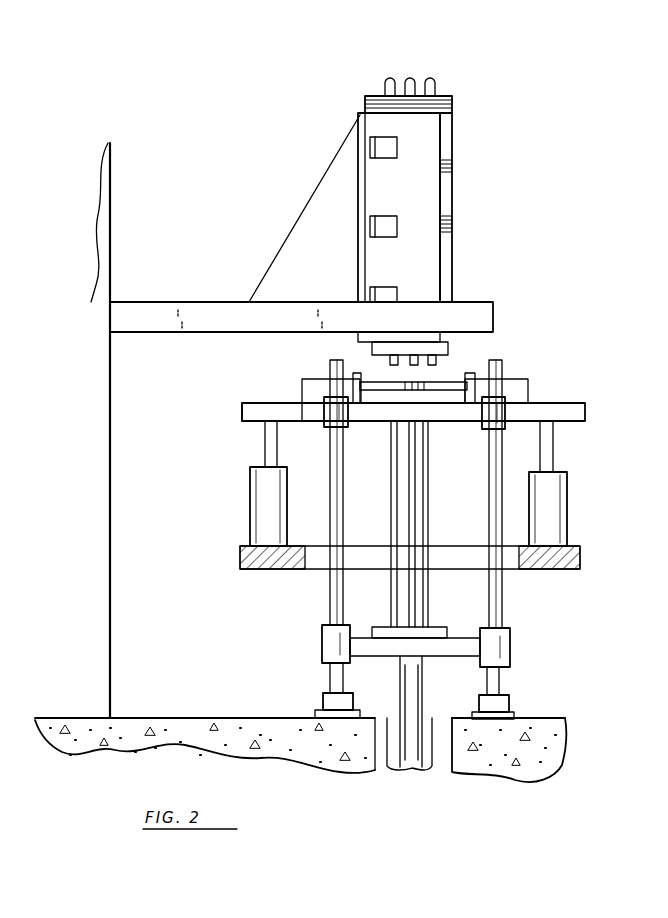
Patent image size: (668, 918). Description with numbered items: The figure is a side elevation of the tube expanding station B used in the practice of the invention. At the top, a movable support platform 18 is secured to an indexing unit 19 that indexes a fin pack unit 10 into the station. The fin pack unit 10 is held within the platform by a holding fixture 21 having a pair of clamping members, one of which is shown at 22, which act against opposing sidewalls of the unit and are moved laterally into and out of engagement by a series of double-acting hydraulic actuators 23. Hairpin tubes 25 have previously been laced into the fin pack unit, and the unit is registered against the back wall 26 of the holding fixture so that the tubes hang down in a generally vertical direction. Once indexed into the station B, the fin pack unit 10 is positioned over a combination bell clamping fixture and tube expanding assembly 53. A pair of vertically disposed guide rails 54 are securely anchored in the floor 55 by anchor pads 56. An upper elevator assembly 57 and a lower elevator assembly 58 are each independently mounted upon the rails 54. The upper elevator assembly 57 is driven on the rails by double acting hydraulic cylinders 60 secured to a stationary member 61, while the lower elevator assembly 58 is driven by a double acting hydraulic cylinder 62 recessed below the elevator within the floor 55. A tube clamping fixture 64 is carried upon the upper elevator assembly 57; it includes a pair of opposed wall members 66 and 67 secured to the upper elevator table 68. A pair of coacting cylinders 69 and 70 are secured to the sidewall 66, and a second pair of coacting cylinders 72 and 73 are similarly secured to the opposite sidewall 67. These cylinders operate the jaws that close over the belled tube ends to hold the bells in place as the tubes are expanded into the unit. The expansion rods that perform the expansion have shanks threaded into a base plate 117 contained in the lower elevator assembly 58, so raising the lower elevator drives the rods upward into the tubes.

The fin pack unit 10 is at (497, 137).
The movable support platform 18 is at (474, 300).
The indexing unit 19 is at (116, 267).
The holding fixture 21 is at (448, 247).
The clamping member 22 is at (430, 200).
The double-acting hydraulic actuators 23 is at (378, 140).
The hairpin tubes 25 is at (437, 86).
The back wall 26 is at (356, 233).
The combination bell clamping fixture and tube expanding assembly 53 is at (572, 384).
The guide rails 54 is at (329, 590).
The floor 55 is at (548, 750).
The anchor pads 56 is at (323, 700).
The upper elevator assembly 57 is at (594, 414).
The lower elevator assembly 58 is at (533, 650).
The double acting hydraulic cylinders 60 is at (253, 506).
The stationary member 61 is at (246, 560).
The double acting hydraulic cylinder 62 is at (411, 762).
The tube clamping fixture 64 is at (445, 372).
The wall member 66 is at (356, 373).
The wall member 67 is at (480, 377).
The upper elevator table 68 is at (248, 405).
The coacting cylinder 69 is at (291, 375).
The coacting cylinder 70 is at (312, 383).
The coacting cylinder 72 is at (550, 369).
The coacting cylinder 73 is at (520, 385).
The base plate 117 is at (378, 652).
The tube expanding station B is at (561, 298).